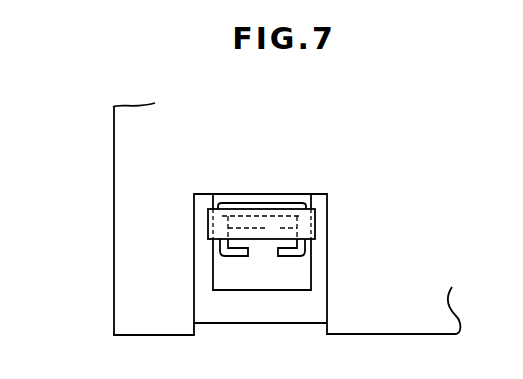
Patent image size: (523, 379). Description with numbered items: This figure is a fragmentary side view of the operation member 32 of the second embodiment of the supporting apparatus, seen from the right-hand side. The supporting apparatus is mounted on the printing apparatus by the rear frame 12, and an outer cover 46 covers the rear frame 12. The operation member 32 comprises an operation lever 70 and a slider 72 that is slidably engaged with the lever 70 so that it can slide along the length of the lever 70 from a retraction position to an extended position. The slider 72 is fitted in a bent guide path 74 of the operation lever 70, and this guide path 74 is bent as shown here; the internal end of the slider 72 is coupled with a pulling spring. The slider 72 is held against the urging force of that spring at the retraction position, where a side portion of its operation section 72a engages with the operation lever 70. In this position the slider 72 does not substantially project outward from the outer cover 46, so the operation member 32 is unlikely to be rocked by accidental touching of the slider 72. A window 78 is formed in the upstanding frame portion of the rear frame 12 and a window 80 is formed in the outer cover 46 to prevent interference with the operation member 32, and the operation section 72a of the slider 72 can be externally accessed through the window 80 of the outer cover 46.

The rear frame 12 is at (212, 313).
The operation member 32 is at (285, 202).
The outer cover 46 is at (120, 186).
The operation lever 70 is at (233, 256).
The slider 72 is at (258, 218).
The operation section 72a is at (216, 212).
The bent guide path 74 is at (314, 207).
The window 78 is at (310, 275).
The window 80 is at (198, 292).